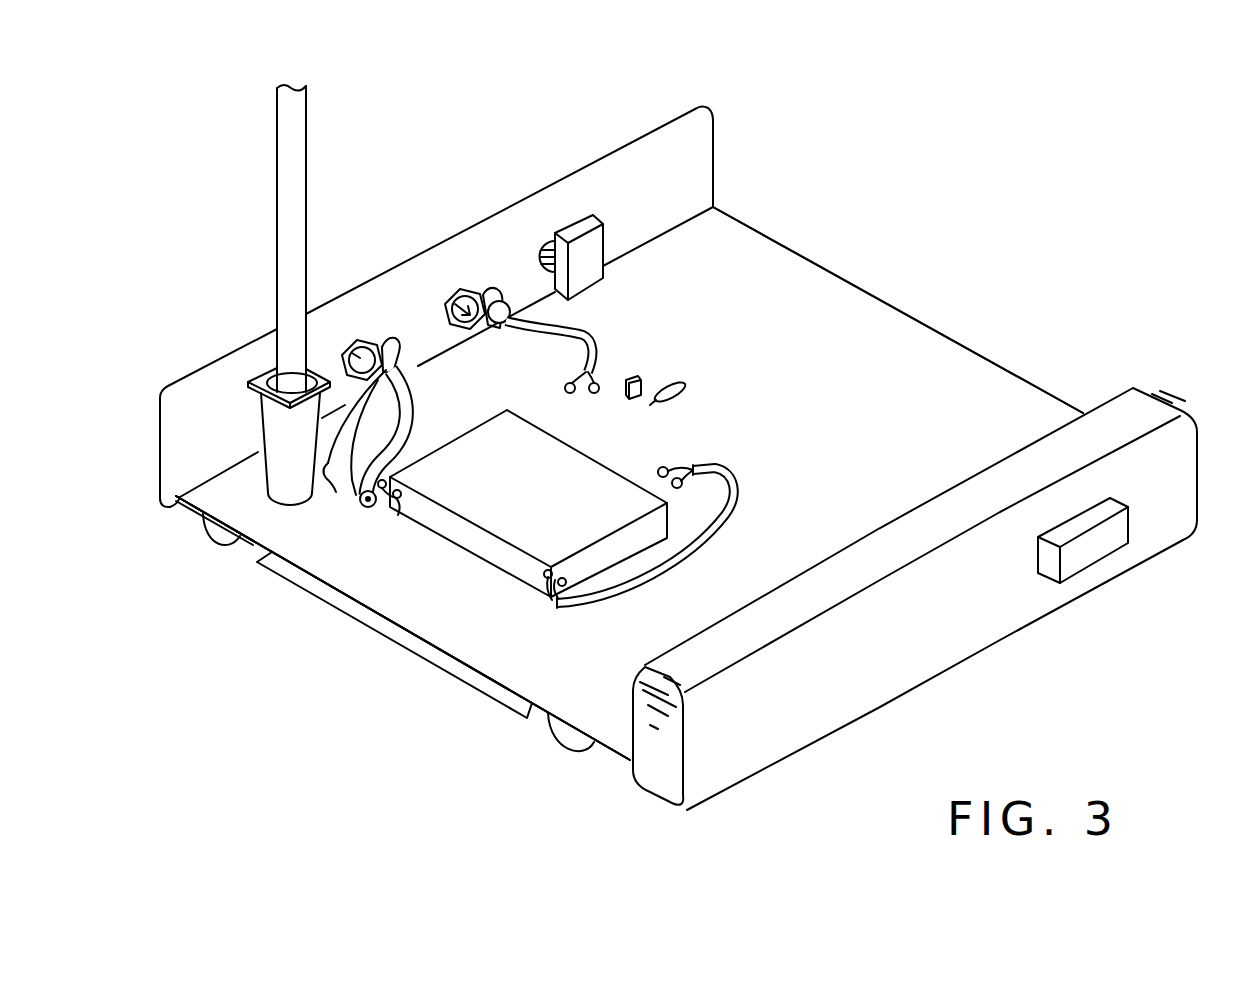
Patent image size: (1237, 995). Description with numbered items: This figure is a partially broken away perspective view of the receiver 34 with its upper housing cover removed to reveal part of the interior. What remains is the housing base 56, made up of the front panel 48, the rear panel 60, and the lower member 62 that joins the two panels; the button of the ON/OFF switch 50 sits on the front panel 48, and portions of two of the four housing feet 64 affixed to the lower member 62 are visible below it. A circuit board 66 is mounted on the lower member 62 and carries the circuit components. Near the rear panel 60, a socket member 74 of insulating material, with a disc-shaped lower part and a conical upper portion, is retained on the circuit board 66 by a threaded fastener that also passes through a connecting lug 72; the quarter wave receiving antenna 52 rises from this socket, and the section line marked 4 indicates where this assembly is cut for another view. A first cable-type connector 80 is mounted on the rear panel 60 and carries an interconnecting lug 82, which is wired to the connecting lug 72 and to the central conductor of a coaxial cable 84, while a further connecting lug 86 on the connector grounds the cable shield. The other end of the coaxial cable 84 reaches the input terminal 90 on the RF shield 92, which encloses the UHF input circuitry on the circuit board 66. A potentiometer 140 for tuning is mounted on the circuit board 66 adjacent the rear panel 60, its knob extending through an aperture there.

The section line 4- 4 is at (292, 380).
The receiver 34 is at (928, 236).
The front panel 48 is at (840, 708).
The ON/OFF switch 50 is at (1117, 543).
The quarter wave receiving antenna 52 is at (308, 143).
The housing base 56 is at (392, 655).
The rear panel 60 is at (160, 432).
The lower member 62 is at (250, 545).
The housing feet 64 is at (205, 518).
The circuit board 66 is at (837, 409).
The connecting lug 72 is at (347, 503).
The socket member 74 is at (259, 405).
The first cable-type connector 80 is at (365, 340).
The interconnecting lug 82 is at (355, 356).
The coaxial cable 84 is at (413, 420).
The further connecting lug 86 is at (392, 340).
The input terminal 90 is at (400, 505).
The RF shield 92 is at (541, 482).
The potentiometer 140 is at (607, 247).